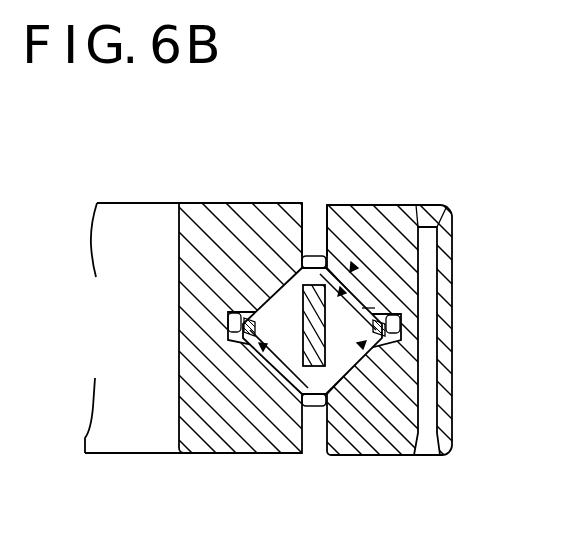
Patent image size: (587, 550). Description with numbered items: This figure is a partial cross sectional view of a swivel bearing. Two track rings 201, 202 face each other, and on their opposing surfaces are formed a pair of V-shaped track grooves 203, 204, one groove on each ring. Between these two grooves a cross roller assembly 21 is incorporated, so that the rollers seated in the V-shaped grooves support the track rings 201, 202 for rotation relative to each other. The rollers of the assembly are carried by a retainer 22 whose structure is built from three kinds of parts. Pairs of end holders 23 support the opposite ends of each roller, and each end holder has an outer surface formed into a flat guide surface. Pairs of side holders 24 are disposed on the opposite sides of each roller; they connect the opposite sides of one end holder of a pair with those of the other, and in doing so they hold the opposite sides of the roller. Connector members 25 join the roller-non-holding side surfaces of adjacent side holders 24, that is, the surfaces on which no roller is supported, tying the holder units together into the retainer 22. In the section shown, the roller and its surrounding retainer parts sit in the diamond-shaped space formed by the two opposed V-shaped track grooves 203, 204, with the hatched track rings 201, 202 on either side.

The cross roller assembly 21 is at (355, 265).
The retainer 22 is at (346, 293).
The end holders 23 is at (312, 250).
The side holders 24 is at (280, 313).
The connector members 25 is at (356, 267).
The track ring 201 is at (207, 443).
The track ring 202 is at (368, 445).
The V-shaped track groove 203 is at (265, 345).
The V-shaped track groove 204 is at (357, 343).